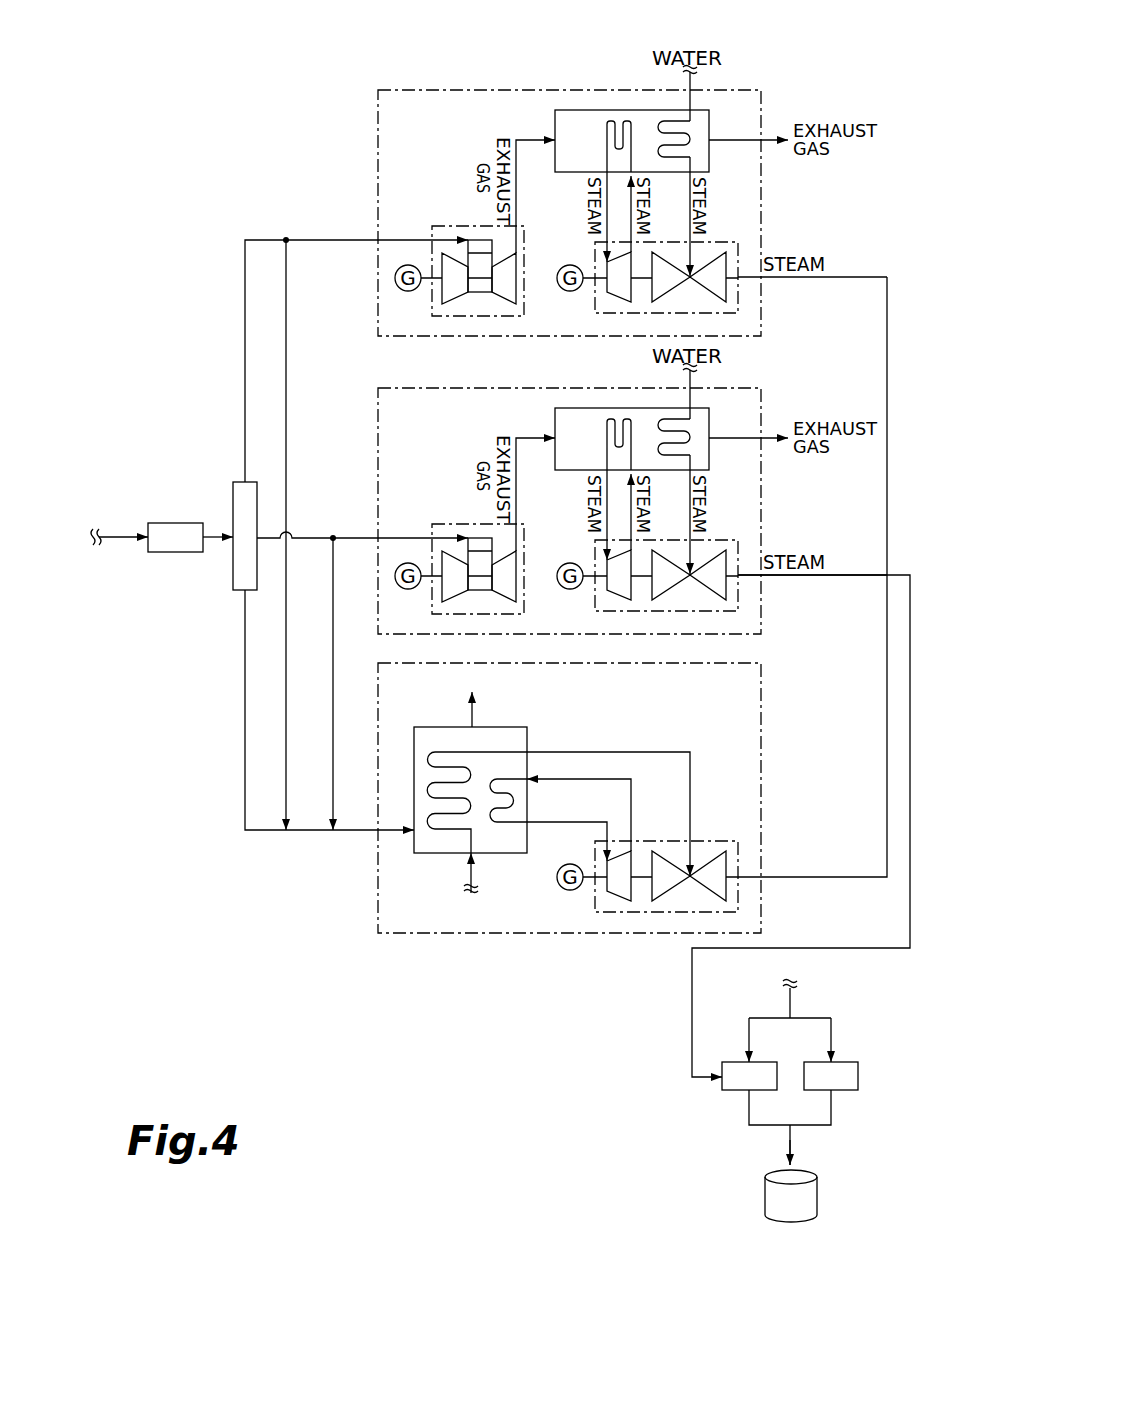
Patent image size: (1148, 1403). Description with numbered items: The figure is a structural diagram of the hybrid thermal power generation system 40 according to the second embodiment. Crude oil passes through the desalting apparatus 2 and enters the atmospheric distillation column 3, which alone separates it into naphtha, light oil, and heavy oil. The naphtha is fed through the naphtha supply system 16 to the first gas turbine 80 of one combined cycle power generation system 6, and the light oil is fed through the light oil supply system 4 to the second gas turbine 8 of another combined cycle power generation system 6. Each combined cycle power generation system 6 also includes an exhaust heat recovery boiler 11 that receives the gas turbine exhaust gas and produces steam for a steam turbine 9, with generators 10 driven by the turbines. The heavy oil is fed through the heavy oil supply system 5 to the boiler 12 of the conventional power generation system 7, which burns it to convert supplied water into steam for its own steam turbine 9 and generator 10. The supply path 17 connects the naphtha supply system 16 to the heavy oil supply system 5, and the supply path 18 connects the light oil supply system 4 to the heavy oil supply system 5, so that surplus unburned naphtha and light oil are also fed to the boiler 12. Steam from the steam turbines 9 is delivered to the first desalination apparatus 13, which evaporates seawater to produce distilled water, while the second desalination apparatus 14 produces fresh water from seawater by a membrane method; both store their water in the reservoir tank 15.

The hybrid thermal power generation system 40 is at (205, 122).
The desalting apparatus 2 is at (181, 523).
The atmospheric distillation column 3 is at (233, 572).
The light oil supply system 4 is at (278, 535).
The heavy oil supply system 5 is at (272, 830).
The combined cycle power generation system 6 is at (782, 402).
The conventional power generation system 7 is at (762, 673).
The second gas turbine 8 is at (455, 524).
The first gas turbine 80 is at (453, 226).
The steam turbine 9 is at (716, 840).
The generator 10 is at (565, 910).
The exhaust heat recovery boiler 11 is at (555, 416).
The boiler 12 is at (503, 727).
The first desalination apparatus 13 is at (757, 1061).
The second desalination apparatus 14 is at (839, 1061).
The reservoir tank 15 is at (818, 1190).
The naphtha supply system 16 is at (272, 237).
The supply path 17 is at (288, 332).
The supply path 18 is at (338, 652).